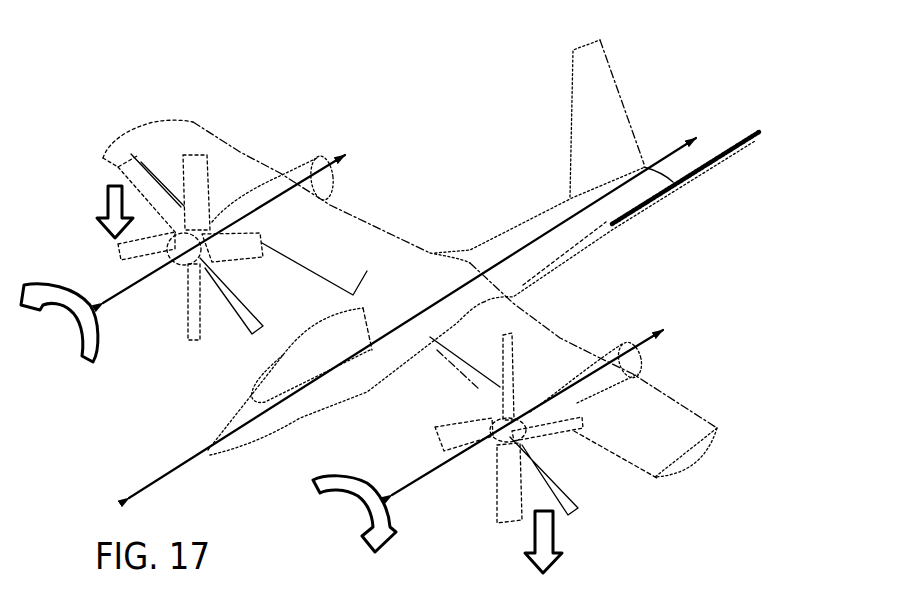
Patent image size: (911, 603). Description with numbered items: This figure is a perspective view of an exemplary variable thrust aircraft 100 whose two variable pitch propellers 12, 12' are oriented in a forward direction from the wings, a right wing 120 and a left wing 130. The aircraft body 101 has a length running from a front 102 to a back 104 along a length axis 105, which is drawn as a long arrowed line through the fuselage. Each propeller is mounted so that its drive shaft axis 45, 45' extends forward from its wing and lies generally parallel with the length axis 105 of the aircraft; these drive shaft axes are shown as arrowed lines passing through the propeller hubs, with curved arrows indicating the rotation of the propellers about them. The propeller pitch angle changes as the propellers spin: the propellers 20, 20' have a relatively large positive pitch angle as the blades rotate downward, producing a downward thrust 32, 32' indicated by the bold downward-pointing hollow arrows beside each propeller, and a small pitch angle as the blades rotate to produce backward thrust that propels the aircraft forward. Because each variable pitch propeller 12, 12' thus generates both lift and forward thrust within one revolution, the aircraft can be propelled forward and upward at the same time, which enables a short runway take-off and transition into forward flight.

The variable thrust aircraft 100 is at (298, 96).
The front 102 is at (209, 450).
The aircraft body 101 is at (482, 251).
The back 104 is at (637, 167).
The length axis 105 is at (152, 481).
The right wing 120 is at (340, 227).
The left wing 130 is at (568, 358).
The propeller 20 is at (136, 168).
The downward thrust 32 is at (94, 212).
The drive shaft axis 45 is at (66, 297).
The variable pitch propeller 12 is at (190, 253).
The propeller 20' is at (637, 464).
The downward thrust 32' is at (567, 542).
The drive shaft axis 45' is at (371, 481).
The variable pitch propeller 12' is at (506, 428).